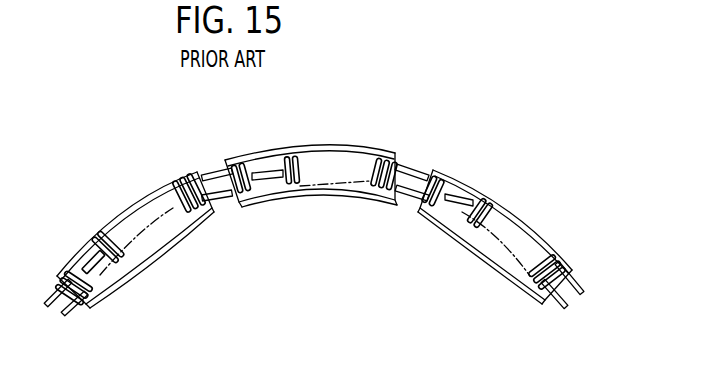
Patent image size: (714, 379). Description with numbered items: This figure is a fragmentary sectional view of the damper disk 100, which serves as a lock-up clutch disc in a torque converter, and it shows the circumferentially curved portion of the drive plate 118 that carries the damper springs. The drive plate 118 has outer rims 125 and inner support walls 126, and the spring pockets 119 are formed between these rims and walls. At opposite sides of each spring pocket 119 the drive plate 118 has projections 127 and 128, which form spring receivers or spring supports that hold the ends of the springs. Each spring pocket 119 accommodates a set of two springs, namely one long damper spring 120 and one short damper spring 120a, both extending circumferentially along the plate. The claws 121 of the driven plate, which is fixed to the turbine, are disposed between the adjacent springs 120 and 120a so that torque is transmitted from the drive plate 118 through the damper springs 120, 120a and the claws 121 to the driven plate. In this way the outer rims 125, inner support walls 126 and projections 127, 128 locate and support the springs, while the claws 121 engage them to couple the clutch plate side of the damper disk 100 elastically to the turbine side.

The damper disk 100 is at (540, 208).
The drive plate 118 is at (471, 179).
The spring pocket 119 is at (341, 172).
The damper spring 120 is at (380, 156).
The short damper spring 120a is at (252, 160).
The claw 121 is at (268, 200).
The outer rim 125 is at (318, 145).
The inner support wall 126 is at (329, 197).
The projection 127 is at (217, 172).
The projection 128 is at (219, 204).